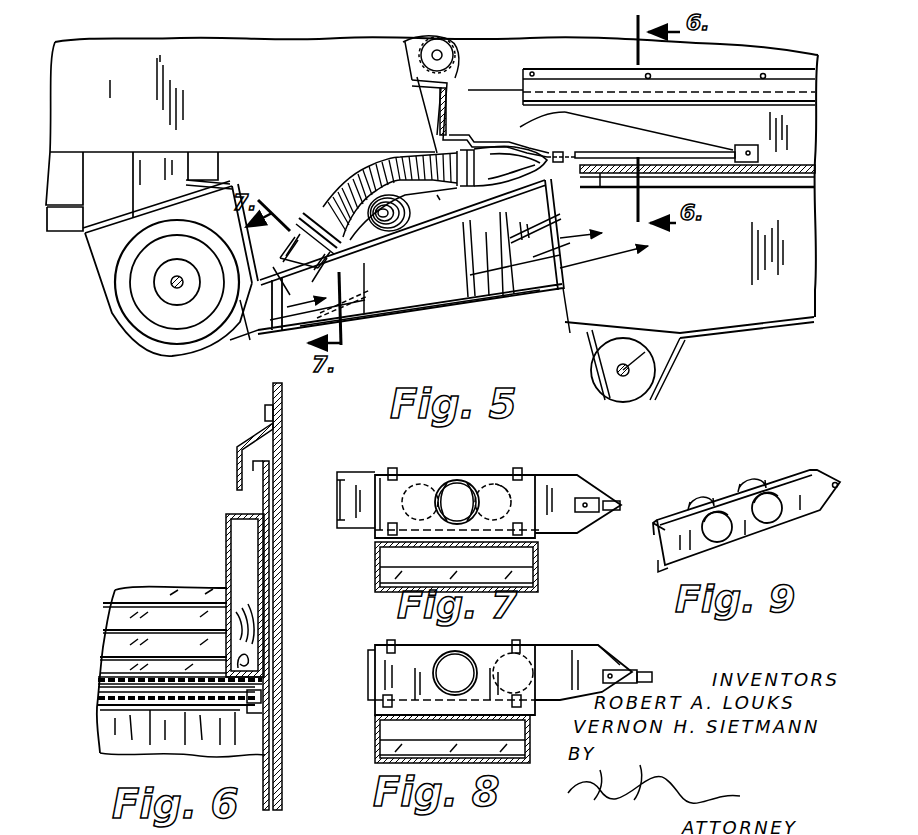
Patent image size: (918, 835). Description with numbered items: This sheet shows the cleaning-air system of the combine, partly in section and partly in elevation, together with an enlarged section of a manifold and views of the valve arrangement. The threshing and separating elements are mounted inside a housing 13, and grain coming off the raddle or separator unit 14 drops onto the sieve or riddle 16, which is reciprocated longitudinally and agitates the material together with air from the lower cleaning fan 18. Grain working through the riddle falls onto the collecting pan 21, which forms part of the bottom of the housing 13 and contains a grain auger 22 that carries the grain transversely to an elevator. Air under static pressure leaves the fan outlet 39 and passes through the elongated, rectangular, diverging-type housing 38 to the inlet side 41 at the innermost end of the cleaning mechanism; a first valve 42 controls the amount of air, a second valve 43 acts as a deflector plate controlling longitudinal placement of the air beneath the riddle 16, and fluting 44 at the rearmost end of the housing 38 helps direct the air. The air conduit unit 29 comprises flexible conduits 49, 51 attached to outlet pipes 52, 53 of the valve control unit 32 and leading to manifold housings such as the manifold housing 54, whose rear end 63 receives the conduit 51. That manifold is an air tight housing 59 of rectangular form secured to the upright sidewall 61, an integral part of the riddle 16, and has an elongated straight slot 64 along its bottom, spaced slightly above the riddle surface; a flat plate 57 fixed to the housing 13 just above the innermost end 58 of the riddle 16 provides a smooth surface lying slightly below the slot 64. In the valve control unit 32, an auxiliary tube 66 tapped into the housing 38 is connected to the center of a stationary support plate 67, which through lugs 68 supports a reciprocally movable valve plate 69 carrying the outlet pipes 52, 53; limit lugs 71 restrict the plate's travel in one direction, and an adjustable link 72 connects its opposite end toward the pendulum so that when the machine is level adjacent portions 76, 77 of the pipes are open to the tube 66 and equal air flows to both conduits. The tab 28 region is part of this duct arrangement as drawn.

In FIG. 5, the housing 13 is at (230, 50).
In FIG. 6, the housing 13 is at (284, 446).
In FIG. 5, the raddle or separator unit 14 is at (457, 31).
In FIG. 6, the raddle or separator unit 14 is at (128, 589).
In FIG. 5, the sieve or riddle 16 is at (798, 159).
In FIG. 6, the sieve or riddle 16 is at (91, 698).
In FIG. 5, the lower cleaning fan 18 is at (110, 341).
In FIG. 5, the collecting pan 21 is at (748, 338).
In FIG. 5, the grain auger 22 is at (660, 394).
In FIG. 5, the air duct 28 is at (389, 321).
In FIG. 5, the air conduit unit 29 is at (320, 176).
In FIG. 5, the valve control unit 32 is at (302, 209).
In FIG. 7, the valve control unit 32 is at (549, 464).
In FIG. 5, the diverging-type housing 38 is at (444, 308).
In FIG. 7, the diverging-type housing 38 is at (373, 552).
In FIG. 8, the diverging-type housing 38 is at (375, 728).
In FIG. 5, the fan outlet 39 is at (237, 342).
In FIG. 5, the inlet side 41 is at (552, 308).
In FIG. 5, the first valve 42 is at (355, 322).
In FIG. 7, the first valve 42 is at (378, 565).
In FIG. 8, the first valve 42 is at (377, 742).
In FIG. 5, the second valve 43 is at (559, 244).
In FIG. 5, the fluting 44 is at (492, 290).
In FIG. 5, the flexible conduit 49 is at (400, 228).
In FIG. 5, the flexible conduit 51 is at (392, 166).
In FIG. 7, the outlet pipe 52 is at (422, 482).
In FIG. 9, the outlet pipe 52 is at (692, 500).
In FIG. 5, the outlet pipe 53 is at (356, 246).
In FIG. 8, the outlet pipe 53 is at (540, 675).
In FIG. 9, the outlet pipe 53 is at (755, 477).
In FIG. 5, the manifold housing 54 is at (513, 121).
In FIG. 6, the manifold housing 54 is at (219, 527).
In FIG. 5, the flat plate 57 is at (588, 176).
In FIG. 6, the flat plate 57 is at (102, 680).
In FIG. 5, the innermost end 58 is at (677, 176).
In FIG. 5, the air tight housing 59 is at (638, 132).
In FIG. 6, the air tight housing 59 is at (229, 558).
In FIG. 5, the upright sidewall 61 is at (800, 118).
In FIG. 6, the upright sidewall 61 is at (262, 495).
In FIG. 5, the rear end 63 is at (483, 187).
In FIG. 5, the slot 64 is at (700, 152).
In FIG. 6, the slot 64 is at (245, 665).
In FIG. 5, the auxiliary tube 66 is at (300, 262).
In FIG. 7, the auxiliary tube 66 is at (462, 480).
In FIG. 8, the auxiliary tube 66 is at (470, 668).
In FIG. 5, the support plate 67 is at (296, 240).
In FIG. 7, the support plate 67 is at (385, 482).
In FIG. 8, the support plate 67 is at (405, 662).
In FIG. 9, the support plate 67 is at (746, 517).
In FIG. 7, the lugs 68 is at (393, 468).
In FIG. 8, the lugs 68 is at (518, 645).
In FIG. 5, the valve plate 69 is at (318, 202).
In FIG. 7, the valve plate 69 is at (358, 480).
In FIG. 8, the valve plate 69 is at (608, 652).
In FIG. 9, the valve plate 69 is at (730, 500).
In FIG. 7, the limit lugs 71 is at (344, 500).
In FIG. 8, the limit lugs 71 is at (368, 700).
In FIG. 9, the limit lugs 71 is at (660, 569).
In FIG. 7, the adjustable link 72 is at (586, 497).
In FIG. 8, the adjustable link 72 is at (645, 672).
In FIG. 7, the adjacent portion 76 is at (448, 485).
In FIG. 7, the adjacent portion 77 is at (500, 482).